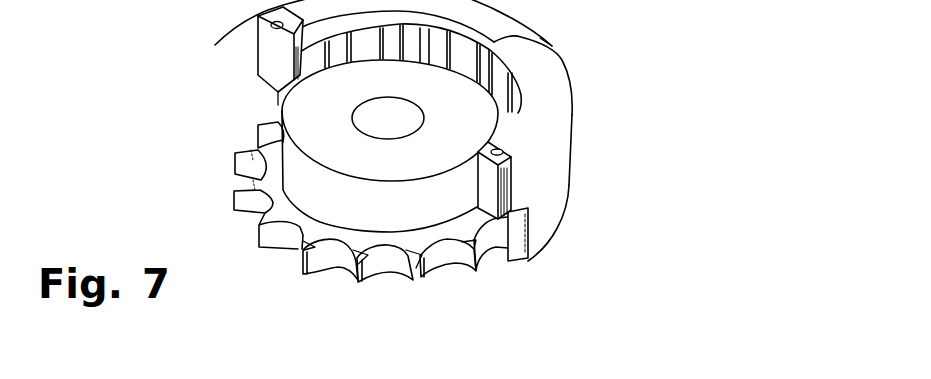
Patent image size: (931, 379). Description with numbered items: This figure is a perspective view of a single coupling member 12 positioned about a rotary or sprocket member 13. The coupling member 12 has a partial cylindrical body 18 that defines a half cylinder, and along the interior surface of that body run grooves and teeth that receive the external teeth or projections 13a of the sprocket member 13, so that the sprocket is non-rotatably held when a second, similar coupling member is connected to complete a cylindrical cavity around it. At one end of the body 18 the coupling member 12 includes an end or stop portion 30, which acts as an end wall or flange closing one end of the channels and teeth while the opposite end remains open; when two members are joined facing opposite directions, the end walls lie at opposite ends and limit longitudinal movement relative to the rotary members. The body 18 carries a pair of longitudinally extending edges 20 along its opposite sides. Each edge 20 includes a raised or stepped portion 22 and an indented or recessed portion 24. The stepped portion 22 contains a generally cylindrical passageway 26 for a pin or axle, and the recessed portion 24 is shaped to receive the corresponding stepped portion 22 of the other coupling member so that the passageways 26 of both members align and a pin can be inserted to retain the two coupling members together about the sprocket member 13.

The coupling member 12 is at (569, 108).
The rotary or sprocket member 13 is at (314, 182).
The teeth or projections 13a is at (366, 283).
The partial cylindrical body 18 is at (570, 148).
The longitudinally extending edge 20 is at (386, 165).
The raised or stepped portion 22 is at (272, 58).
The indented or recessed portion 24 is at (276, 97).
The cylindrical passageway 26 is at (262, 22).
The end or stop portion 30 is at (552, 46).